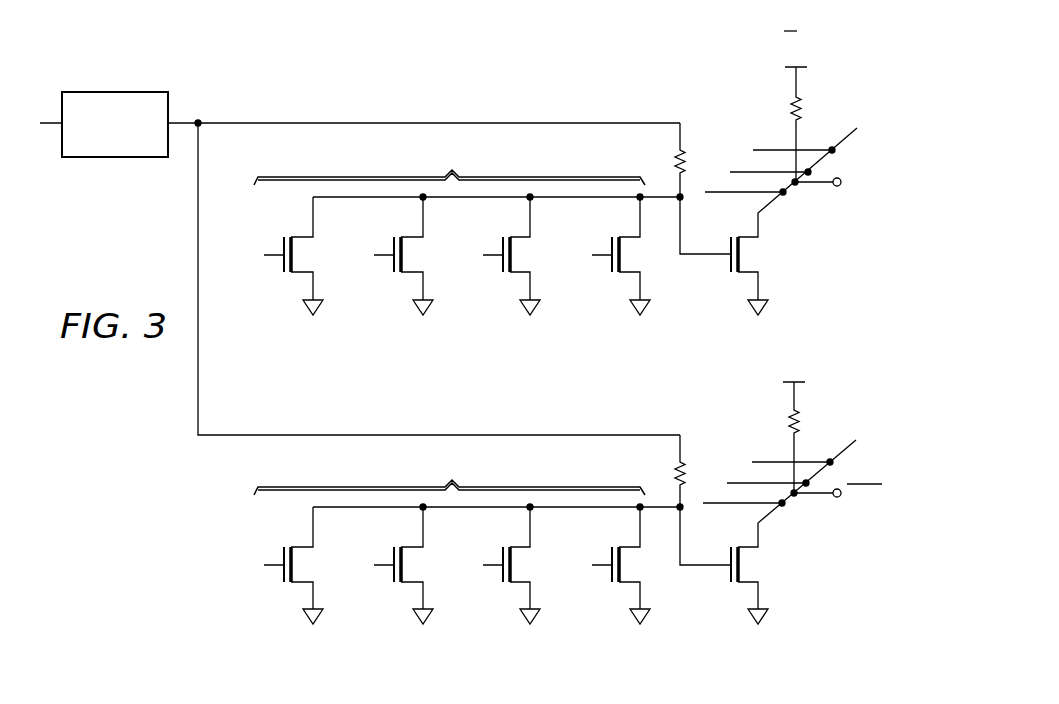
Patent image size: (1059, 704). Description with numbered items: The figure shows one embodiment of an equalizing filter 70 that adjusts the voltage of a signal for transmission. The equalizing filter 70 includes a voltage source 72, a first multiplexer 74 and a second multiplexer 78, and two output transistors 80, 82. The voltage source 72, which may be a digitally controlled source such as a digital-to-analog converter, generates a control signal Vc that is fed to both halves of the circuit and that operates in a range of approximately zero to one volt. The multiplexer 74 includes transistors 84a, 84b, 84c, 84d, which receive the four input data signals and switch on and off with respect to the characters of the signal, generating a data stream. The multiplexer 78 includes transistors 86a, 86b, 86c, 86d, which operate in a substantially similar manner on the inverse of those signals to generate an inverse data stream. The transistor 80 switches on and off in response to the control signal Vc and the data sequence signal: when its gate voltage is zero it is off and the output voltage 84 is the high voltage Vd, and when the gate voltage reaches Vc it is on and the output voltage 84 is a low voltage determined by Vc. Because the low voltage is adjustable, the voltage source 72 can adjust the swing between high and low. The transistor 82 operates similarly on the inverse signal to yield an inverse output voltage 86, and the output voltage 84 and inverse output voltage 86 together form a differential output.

The equalizing filter 70 is at (360, 78).
The voltage source 72 is at (115, 92).
The multiplexer 74 is at (468, 172).
The multiplexer 78 is at (468, 483).
The transistor 80 is at (729, 263).
The transistor 82 is at (729, 573).
The output voltage 84 is at (863, 198).
The inverse output voltage 86 is at (862, 508).
The transistor 84a is at (282, 243).
The transistor 84b is at (392, 243).
The transistor 84c is at (500, 243).
The transistor 84d is at (609, 243).
The transistor 86a is at (282, 576).
The transistor 86b is at (392, 576).
The transistor 86c is at (500, 576).
The transistor 86d is at (609, 576).